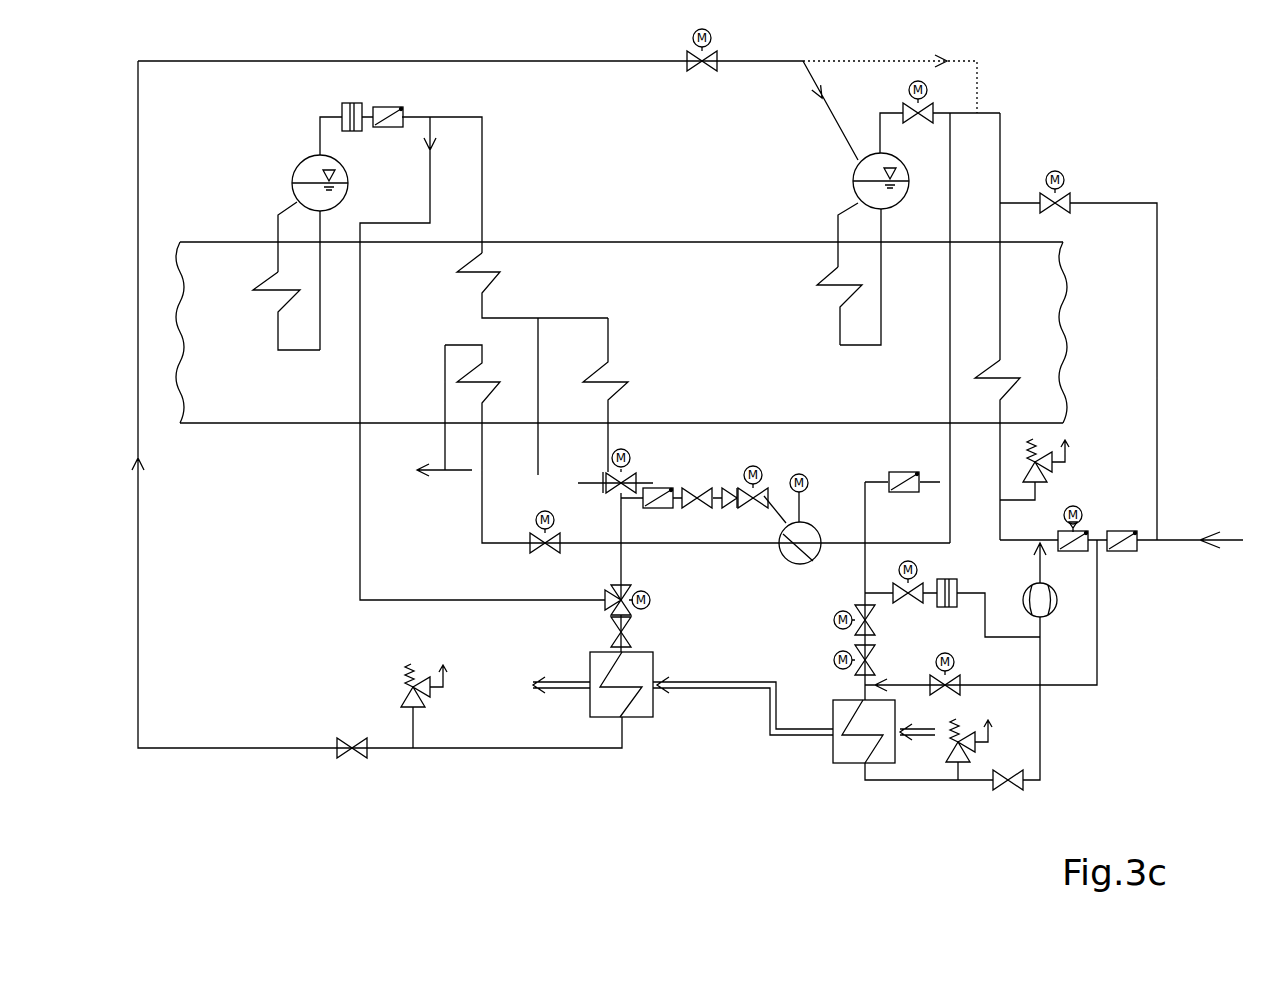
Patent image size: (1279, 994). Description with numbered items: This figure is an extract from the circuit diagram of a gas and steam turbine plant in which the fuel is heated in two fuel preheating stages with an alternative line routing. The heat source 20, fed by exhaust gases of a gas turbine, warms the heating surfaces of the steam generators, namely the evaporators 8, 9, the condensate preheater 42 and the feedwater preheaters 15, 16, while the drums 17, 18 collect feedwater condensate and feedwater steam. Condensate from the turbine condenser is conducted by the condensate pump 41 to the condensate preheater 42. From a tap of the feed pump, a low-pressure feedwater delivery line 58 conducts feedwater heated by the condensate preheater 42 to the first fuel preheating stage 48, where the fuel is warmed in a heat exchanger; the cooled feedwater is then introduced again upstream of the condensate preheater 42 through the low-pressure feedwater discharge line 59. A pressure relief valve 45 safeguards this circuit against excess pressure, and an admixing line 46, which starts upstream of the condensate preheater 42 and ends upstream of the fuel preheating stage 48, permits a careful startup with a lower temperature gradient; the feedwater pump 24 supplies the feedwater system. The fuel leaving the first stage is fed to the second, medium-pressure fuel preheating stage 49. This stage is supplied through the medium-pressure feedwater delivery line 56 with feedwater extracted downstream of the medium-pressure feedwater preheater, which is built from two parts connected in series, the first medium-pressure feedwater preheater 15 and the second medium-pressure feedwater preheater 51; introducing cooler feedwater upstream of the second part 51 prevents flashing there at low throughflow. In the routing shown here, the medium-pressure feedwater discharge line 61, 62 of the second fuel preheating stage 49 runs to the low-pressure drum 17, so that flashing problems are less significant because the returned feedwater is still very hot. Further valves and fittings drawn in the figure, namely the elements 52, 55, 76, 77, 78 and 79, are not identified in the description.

The evaporator 8 is at (838, 333).
The medium-pressure evaporator 9 is at (278, 337).
The first medium-pressure feedwater preheater 15 is at (610, 342).
The feedwater preheater 16 is at (445, 365).
The low-pressure drum 17 is at (855, 177).
The drum 18 is at (297, 170).
The heat source 20 is at (703, 230).
The feedwater pump 24 is at (786, 556).
The condensate pump 41 is at (1208, 540).
The condensate preheater 42 is at (1003, 342).
The pressure relief valve 45 is at (1052, 470).
The admixing line 46 is at (1088, 688).
The fuel preheating stage 48 is at (848, 767).
The medium-pressure fuel preheating stage 49 is at (645, 720).
The second medium-pressure feedwater preheater 51 is at (485, 312).
The pressure relief valve 52 is at (962, 737).
The pressure relief valve 55 is at (410, 722).
The medium-pressure feedwater delivery line 56 is at (446, 198).
The low-pressure feedwater delivery line 58 is at (880, 692).
The low-pressure feedwater discharge line 59 is at (1045, 742).
The medium-pressure feedwater discharge line 61 is at (135, 642).
The medium-pressure feedwater discharge line 62 is at (866, 55).
The flow controller 76 is at (1132, 552).
The transfer line 77 is at (825, 735).
The control valve 78 is at (625, 560).
The heat exchanger 79 is at (610, 670).